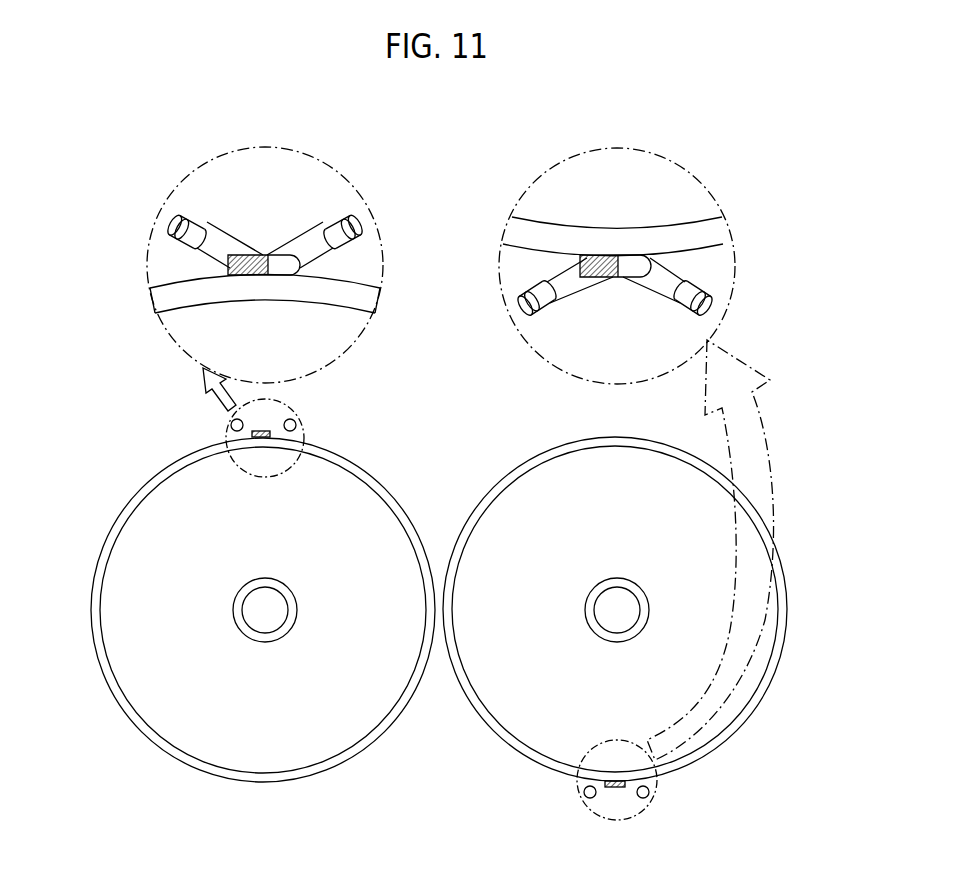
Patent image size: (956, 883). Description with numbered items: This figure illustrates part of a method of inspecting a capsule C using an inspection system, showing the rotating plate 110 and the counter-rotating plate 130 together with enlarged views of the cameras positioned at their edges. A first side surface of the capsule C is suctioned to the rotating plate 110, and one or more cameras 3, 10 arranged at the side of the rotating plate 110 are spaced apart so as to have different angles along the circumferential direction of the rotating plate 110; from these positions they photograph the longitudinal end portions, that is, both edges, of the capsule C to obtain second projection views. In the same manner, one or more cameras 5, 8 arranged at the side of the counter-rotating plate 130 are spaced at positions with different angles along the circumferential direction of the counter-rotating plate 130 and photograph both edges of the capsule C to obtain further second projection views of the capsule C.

The camera 3 is at (178, 226).
The camera 10 is at (352, 228).
The camera 5 is at (703, 296).
The camera 8 is at (537, 298).
The rotating plate 110 is at (300, 700).
The counter-rotating plate 130 is at (540, 700).
The capsule C is at (628, 263).